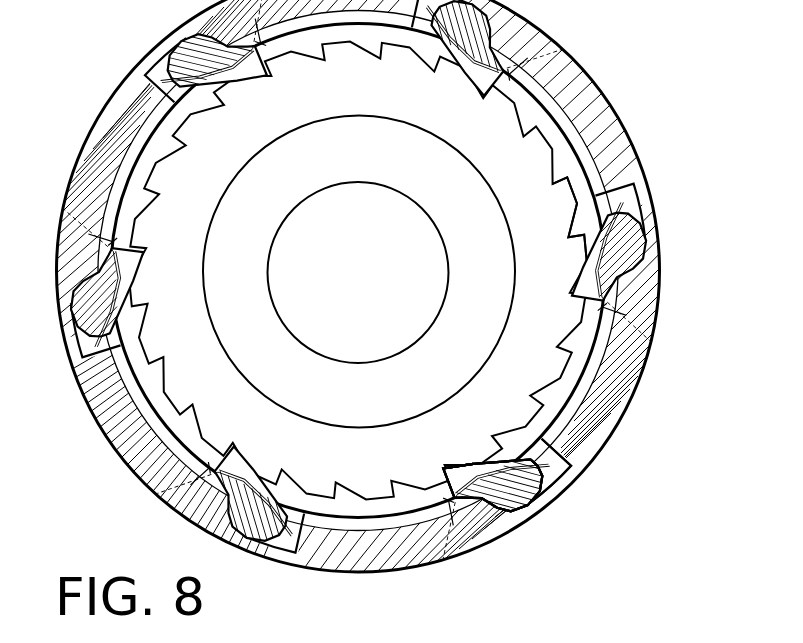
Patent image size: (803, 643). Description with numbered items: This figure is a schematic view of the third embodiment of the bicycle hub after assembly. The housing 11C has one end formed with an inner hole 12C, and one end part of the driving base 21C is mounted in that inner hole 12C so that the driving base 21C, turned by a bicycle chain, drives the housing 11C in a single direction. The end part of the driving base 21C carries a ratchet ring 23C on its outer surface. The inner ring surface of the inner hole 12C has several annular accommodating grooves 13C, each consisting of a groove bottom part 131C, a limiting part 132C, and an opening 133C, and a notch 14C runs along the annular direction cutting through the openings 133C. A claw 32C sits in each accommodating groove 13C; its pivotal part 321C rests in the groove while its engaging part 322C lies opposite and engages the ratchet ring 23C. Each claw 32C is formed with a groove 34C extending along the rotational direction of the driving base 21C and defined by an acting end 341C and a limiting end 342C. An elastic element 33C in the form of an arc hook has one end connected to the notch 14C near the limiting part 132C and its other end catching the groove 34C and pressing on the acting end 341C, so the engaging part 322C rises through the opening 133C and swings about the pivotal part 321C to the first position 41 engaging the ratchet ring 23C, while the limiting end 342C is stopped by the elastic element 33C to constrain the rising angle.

The housing 11C is at (592, 82).
The inner hole 12C is at (580, 324).
The annular accommodating groove 13C is at (473, 533).
The notch 14C is at (324, 518).
The driving base 21C is at (537, 170).
The ratchet ring 23C is at (593, 350).
The claw 32C is at (497, 470).
The elastic element 33C is at (518, 470).
The groove 34C is at (500, 510).
The first position 41 is at (443, 462).
The groove bottom part 131C is at (533, 502).
The limiting part 132C is at (445, 510).
The opening 133C is at (440, 517).
The pivotal part 321C is at (560, 485).
The engaging part 322C is at (452, 460).
The acting end 341C is at (550, 470).
The limiting end 342C is at (447, 475).